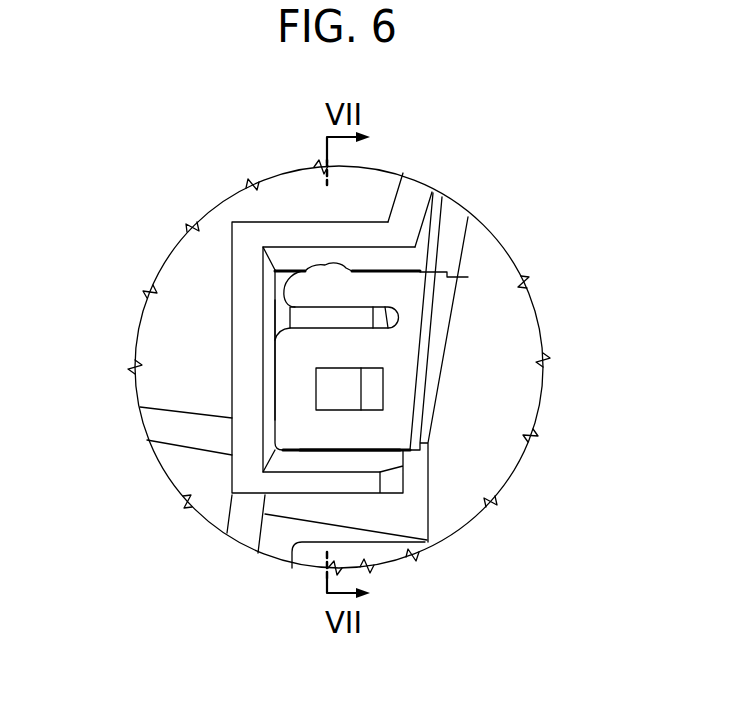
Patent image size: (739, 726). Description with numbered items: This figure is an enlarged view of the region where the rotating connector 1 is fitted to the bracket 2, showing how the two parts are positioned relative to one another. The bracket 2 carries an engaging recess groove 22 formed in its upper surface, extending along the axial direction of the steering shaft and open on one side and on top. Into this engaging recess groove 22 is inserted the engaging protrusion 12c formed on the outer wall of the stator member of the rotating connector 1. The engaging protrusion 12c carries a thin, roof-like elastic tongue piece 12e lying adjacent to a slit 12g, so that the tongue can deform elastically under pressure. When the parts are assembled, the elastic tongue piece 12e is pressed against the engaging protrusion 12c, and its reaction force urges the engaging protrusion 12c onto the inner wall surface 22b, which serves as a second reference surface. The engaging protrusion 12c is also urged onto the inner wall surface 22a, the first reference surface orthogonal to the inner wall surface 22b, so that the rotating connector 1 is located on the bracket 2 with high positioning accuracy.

The rotating connector 1 is at (500, 310).
The bracket 2 is at (368, 174).
The engaging recess groove 22 is at (386, 265).
The inner wall surface 22a is at (275, 393).
The inner wall surface 22b is at (352, 522).
The engaging protrusion 12c is at (397, 384).
The elastic tongue piece 12e is at (297, 288).
The slit 12g is at (303, 317).